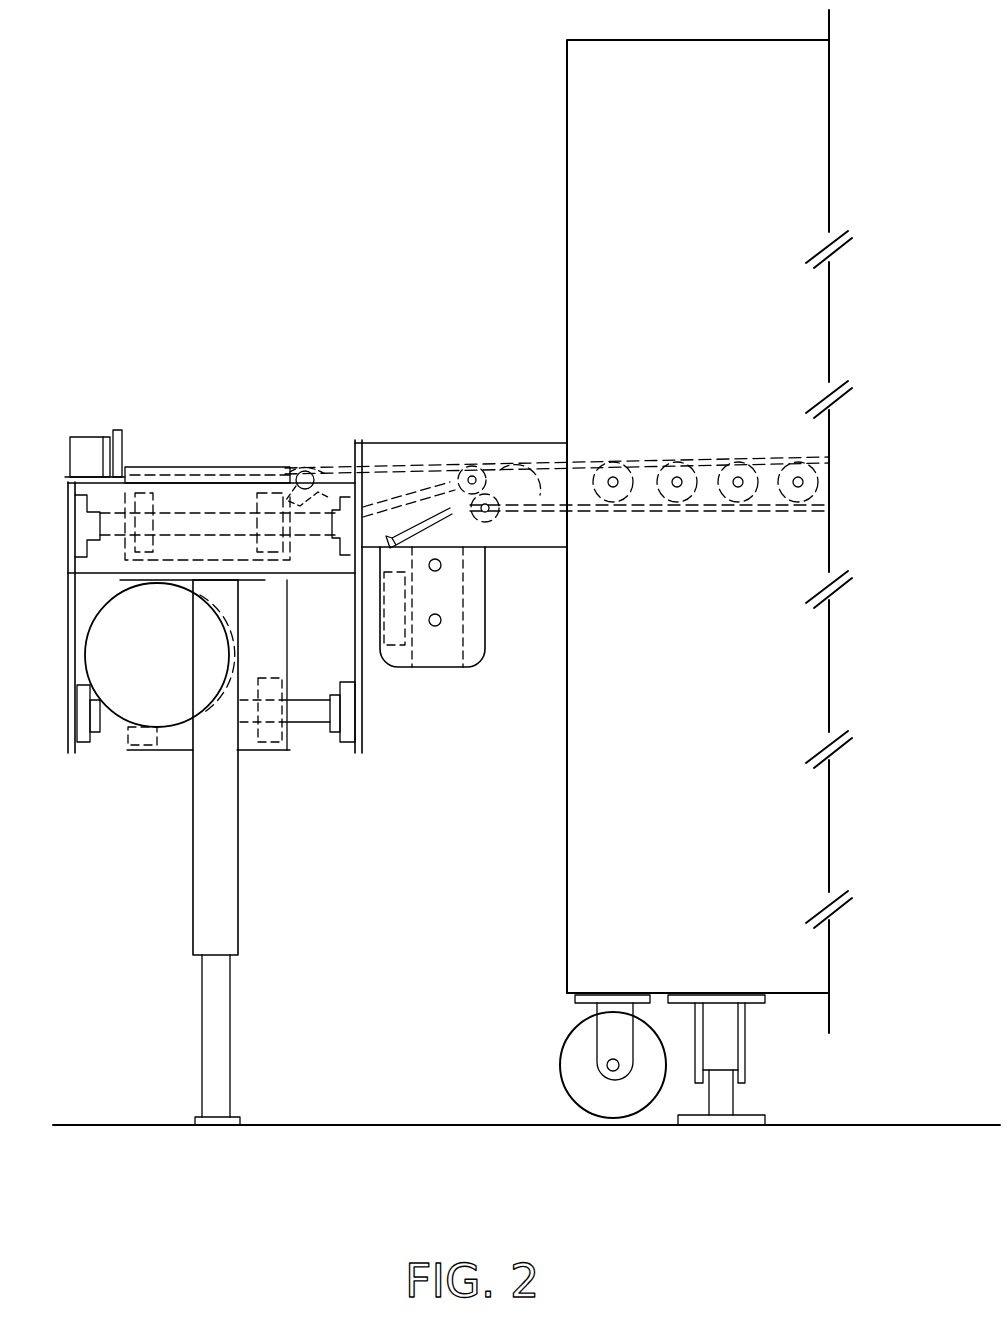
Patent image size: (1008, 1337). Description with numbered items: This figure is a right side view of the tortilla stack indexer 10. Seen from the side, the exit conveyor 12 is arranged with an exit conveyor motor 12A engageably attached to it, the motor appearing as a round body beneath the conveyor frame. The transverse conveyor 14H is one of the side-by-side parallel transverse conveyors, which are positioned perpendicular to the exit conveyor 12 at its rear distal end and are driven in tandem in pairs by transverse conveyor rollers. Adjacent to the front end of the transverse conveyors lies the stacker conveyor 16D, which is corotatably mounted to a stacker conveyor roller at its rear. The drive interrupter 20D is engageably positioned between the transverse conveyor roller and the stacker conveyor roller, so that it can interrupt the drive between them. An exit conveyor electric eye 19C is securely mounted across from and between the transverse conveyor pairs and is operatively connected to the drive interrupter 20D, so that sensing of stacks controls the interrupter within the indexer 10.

The tortilla stack indexer 10 is at (322, 358).
The exit conveyor 12 is at (192, 464).
The exit conveyor motor 12A is at (137, 697).
The transverse conveyor 14H is at (318, 468).
The stacker conveyor 16D is at (552, 460).
The exit conveyor electric eye 19C is at (100, 450).
The drive interrupter 20D is at (427, 676).